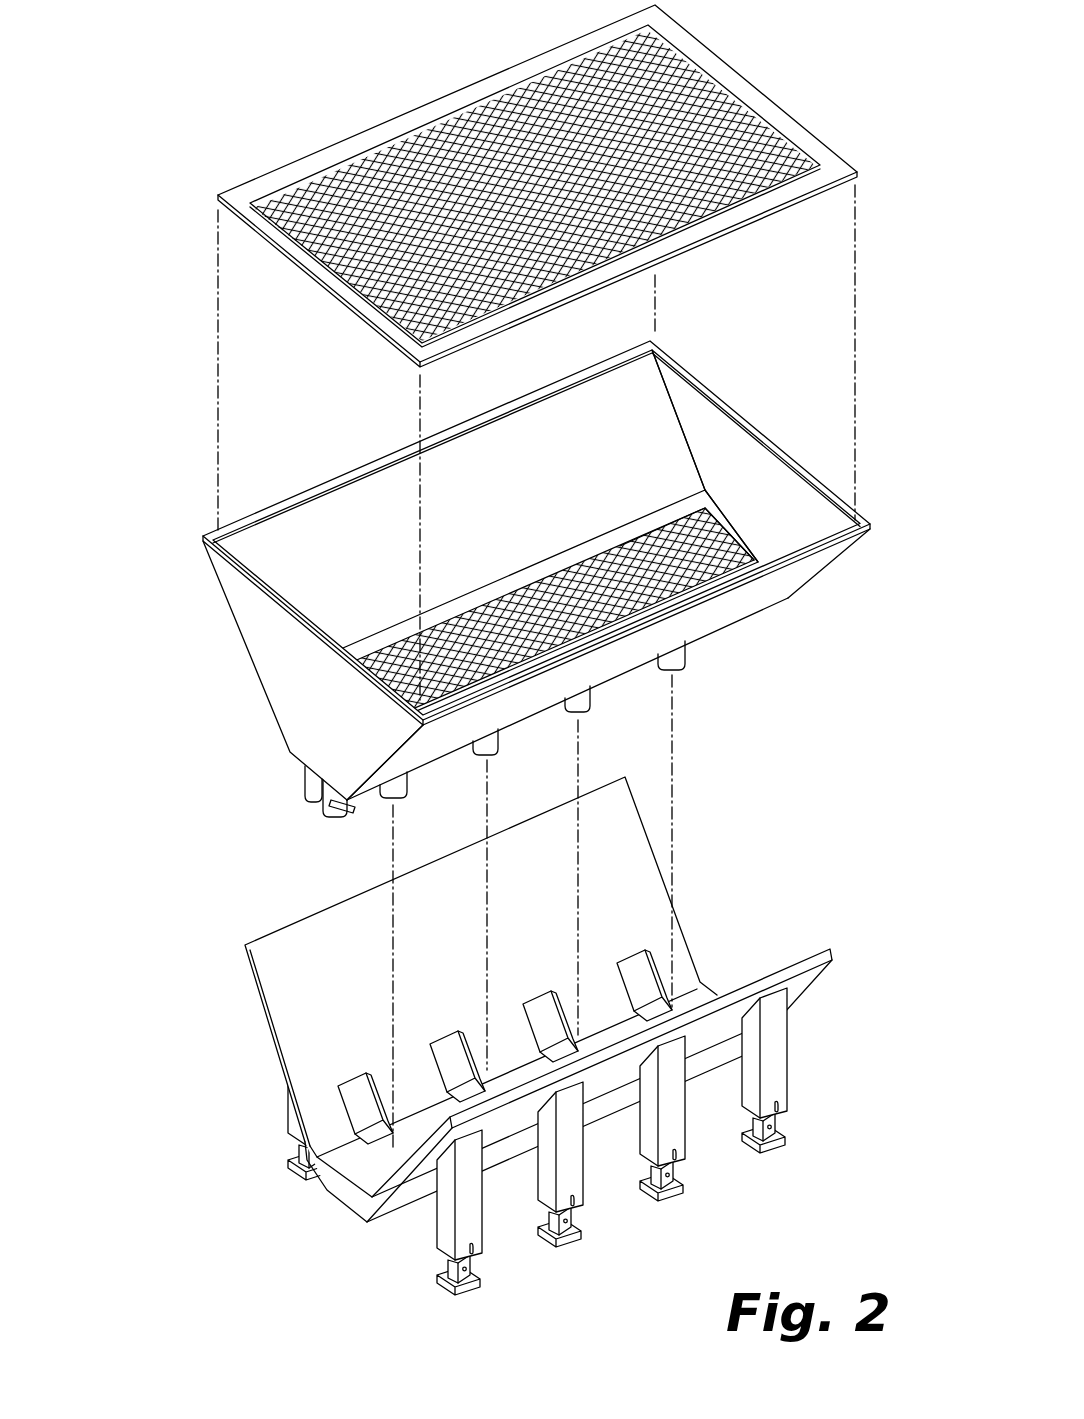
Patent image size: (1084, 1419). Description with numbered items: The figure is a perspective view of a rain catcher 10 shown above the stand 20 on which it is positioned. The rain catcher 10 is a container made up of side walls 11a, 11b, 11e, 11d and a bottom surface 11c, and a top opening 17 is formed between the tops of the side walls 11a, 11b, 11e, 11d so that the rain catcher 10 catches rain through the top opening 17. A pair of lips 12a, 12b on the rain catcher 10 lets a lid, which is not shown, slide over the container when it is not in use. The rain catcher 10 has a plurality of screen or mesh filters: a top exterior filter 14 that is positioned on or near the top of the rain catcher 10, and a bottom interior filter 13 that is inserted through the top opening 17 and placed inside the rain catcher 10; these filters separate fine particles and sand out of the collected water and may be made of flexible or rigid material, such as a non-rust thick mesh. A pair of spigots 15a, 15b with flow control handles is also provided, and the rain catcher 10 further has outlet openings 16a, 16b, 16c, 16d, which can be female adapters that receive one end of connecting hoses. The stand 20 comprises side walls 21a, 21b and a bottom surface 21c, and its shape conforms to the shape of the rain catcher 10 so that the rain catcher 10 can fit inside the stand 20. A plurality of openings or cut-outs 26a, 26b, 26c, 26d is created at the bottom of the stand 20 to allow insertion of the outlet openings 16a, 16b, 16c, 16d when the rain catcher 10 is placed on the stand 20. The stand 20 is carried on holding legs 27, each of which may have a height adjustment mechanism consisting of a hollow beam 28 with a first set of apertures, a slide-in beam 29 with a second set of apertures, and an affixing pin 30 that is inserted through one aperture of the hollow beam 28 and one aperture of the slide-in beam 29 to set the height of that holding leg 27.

The rain catcher 10 is at (489, 597).
The side wall 11a is at (542, 546).
The side wall 11b is at (785, 578).
The bottom surface 11c is at (757, 631).
The side wall 11d is at (272, 635).
The side wall 11e is at (732, 470).
The lip 12a is at (298, 490).
The lip 12b is at (437, 747).
The bottom interior filter 13 is at (752, 542).
The top exterior filter 14 is at (752, 92).
The spigot 15a is at (300, 805).
The spigot 15b is at (328, 829).
The outlet opening 16a is at (403, 793).
The outlet opening 16b is at (497, 745).
The outlet opening 16c is at (590, 700).
The outlet opening 16d is at (683, 670).
The top opening 17 is at (536, 507).
The stand 20 is at (499, 1000).
The side wall 21a is at (298, 982).
The side wall 21b is at (797, 965).
The bottom surface 21c is at (392, 1226).
The opening/cut-out 26a is at (355, 1100).
The opening/cut-out 26b is at (450, 1055).
The opening/cut-out 26c is at (542, 1012).
The opening/cut-out 26d is at (638, 980).
The holding leg 27 is at (537, 1000).
The hollow beam 28 is at (790, 1093).
The slide-in beam 29 is at (772, 1150).
The affixing pin 30 is at (776, 1125).